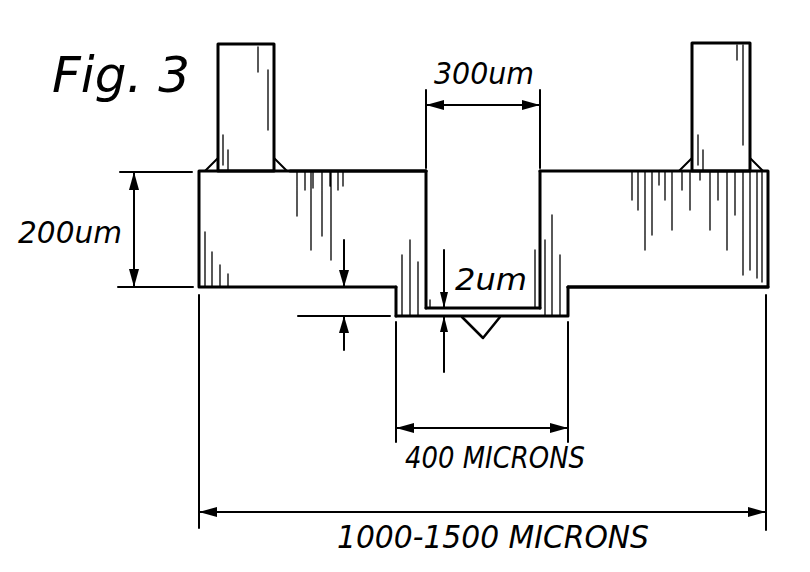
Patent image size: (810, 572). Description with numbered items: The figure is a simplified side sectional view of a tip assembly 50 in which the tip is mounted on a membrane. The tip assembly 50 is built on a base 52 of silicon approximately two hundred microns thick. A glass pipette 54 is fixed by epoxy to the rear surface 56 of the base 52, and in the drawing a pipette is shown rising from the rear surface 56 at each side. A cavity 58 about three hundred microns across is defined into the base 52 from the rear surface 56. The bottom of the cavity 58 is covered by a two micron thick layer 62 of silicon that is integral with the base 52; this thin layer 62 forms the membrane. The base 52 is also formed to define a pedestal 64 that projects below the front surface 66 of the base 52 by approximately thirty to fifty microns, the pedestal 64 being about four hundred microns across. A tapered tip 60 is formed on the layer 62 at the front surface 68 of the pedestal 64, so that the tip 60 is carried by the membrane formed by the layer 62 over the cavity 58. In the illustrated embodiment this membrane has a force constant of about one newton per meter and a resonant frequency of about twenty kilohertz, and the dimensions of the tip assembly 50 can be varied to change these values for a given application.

The tip assembly 50 is at (175, 376).
The base 52 is at (272, 266).
The glass pipette 54 is at (274, 70).
The rear surface 56 is at (383, 128).
The cavity 58 is at (428, 205).
The tapered tip 60 is at (496, 322).
The layer 62 is at (522, 308).
The pedestal 64 is at (392, 300).
The front surface 66 is at (674, 288).
The front surface 68 is at (420, 318).